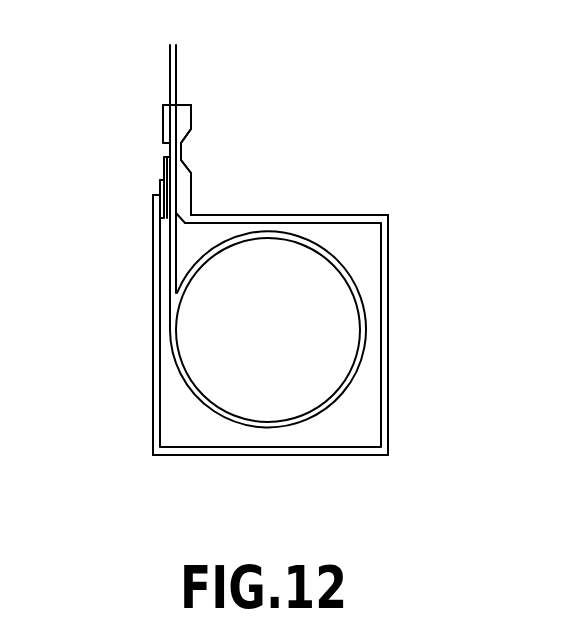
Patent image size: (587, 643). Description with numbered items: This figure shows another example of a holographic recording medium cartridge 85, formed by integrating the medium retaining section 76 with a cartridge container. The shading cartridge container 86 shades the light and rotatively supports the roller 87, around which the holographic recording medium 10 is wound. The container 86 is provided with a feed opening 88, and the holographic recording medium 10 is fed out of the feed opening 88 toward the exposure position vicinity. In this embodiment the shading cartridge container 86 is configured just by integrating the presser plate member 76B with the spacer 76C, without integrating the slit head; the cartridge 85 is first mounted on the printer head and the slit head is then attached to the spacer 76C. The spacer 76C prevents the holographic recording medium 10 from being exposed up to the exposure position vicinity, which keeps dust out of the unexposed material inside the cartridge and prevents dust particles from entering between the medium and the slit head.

The holographic recording medium 10 is at (170, 79).
The medium retaining section 76 is at (217, 91).
The presser plate member 76B is at (163, 119).
The spacer 76C is at (192, 115).
The holographic recording medium cartridge 85 is at (401, 221).
The shading cartridge container 86 is at (389, 247).
The roller 87 is at (318, 352).
The feed opening 88 is at (167, 228).